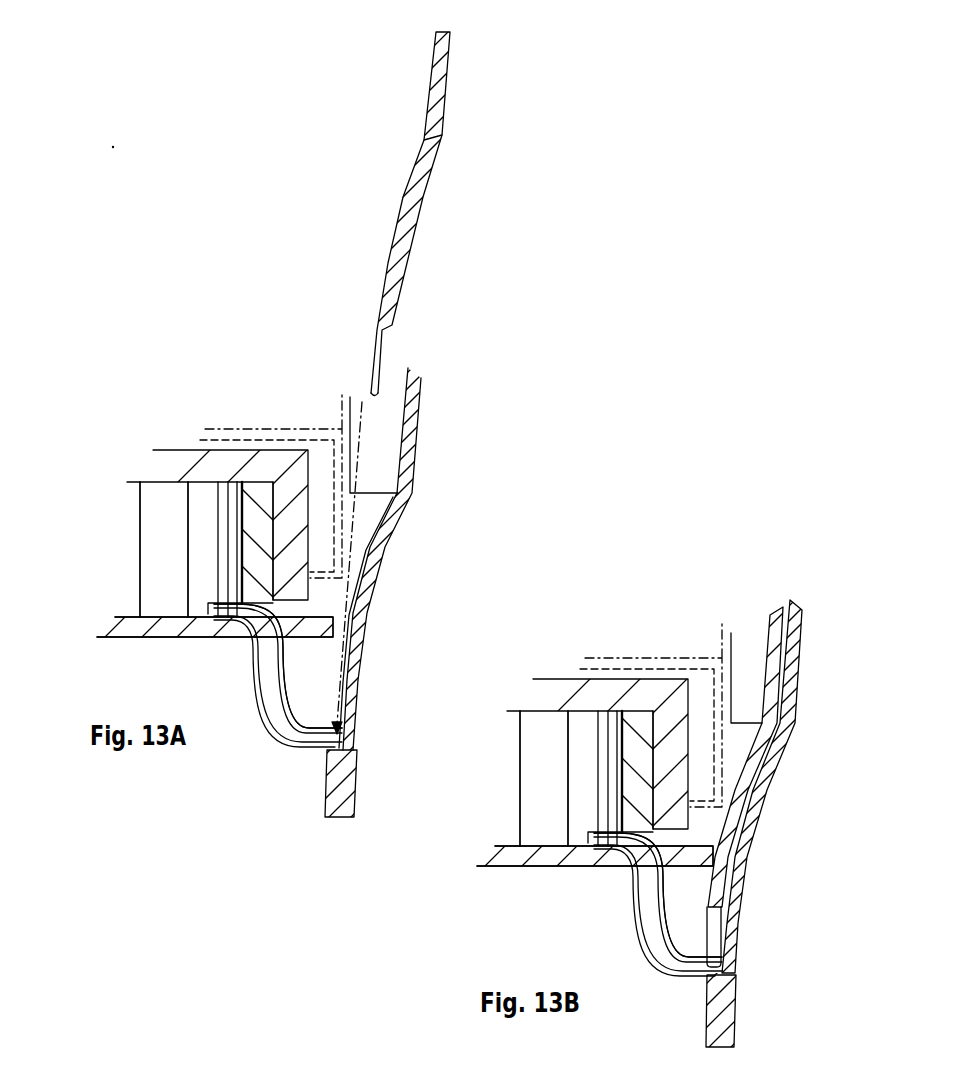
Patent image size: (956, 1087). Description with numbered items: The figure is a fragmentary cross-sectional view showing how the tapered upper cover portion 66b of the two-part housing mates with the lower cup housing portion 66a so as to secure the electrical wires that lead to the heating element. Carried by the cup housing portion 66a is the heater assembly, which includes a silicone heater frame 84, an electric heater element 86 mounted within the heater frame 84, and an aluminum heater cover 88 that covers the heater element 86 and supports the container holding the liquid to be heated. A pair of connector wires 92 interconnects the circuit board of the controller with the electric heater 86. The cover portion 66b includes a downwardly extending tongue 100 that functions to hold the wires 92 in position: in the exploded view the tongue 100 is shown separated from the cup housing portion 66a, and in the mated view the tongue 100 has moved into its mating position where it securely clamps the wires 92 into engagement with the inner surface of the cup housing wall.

In FIG. 13A, the upper cover portion 66b is at (451, 53).
In FIG. 13B, the upper cover portion 66b is at (778, 648).
In FIG. 13A, the lower cup housing portion 66a is at (355, 753).
In FIG. 13B, the lower cup housing portion 66a is at (738, 977).
In FIG. 13A, the tongue 100 is at (392, 302).
In FIG. 13B, the tongue 100 is at (730, 841).
In FIG. 13A, the heater cover 88 is at (183, 460).
In FIG. 13B, the heater cover 88 is at (639, 798).
In FIG. 13A, the electric heater element 86 is at (180, 549).
In FIG. 13B, the electric heater element 86 is at (518, 778).
In FIG. 13A, the heater frame 84 is at (186, 628).
In FIG. 13B, the heater frame 84 is at (579, 881).
In FIG. 13A, the connector wires 92 is at (248, 685).
In FIG. 13B, the connector wires 92 is at (636, 895).